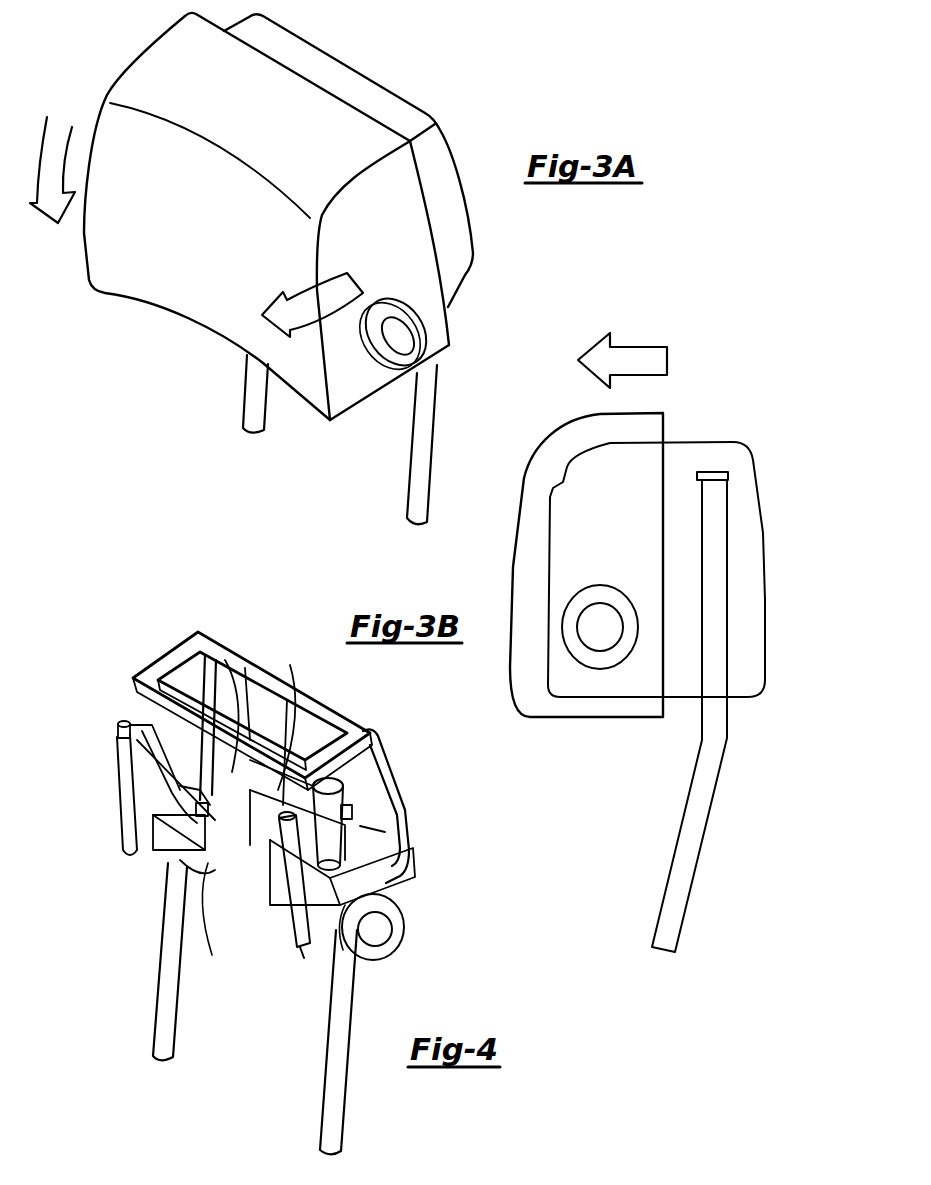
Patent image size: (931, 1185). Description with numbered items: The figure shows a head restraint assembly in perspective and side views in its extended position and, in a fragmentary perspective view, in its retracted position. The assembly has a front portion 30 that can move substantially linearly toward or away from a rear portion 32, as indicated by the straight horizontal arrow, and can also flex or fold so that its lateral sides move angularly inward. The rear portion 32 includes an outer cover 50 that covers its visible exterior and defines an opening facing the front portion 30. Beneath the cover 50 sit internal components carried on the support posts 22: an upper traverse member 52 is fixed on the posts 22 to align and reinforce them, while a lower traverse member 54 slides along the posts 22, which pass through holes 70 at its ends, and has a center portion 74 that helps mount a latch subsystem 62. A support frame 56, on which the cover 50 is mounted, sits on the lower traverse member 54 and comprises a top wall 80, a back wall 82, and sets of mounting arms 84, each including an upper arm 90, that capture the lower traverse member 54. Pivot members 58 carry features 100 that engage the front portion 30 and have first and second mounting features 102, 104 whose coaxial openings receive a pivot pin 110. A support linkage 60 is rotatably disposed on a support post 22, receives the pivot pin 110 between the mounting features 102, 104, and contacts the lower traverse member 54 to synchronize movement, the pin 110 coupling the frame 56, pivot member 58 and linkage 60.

In FIG. 3A, the support post 22 is at (403, 493).
In FIG. 3B, the support post 22 is at (676, 850).
In FIG. 4, the support post 22 is at (320, 1125).
In FIG. 3A, the front portion 30 is at (87, 260).
In FIG. 3B, the front portion 30 is at (510, 565).
In FIG. 3A, the rear portion 32 is at (383, 88).
In FIG. 3B, the rear portion 32 is at (766, 534).
In FIG. 3A, the outer cover 50 is at (473, 258).
In FIG. 3B, the outer cover 50 is at (765, 657).
In FIG. 4, the upper traverse member 52 is at (238, 734).
In FIG. 4, the lower traverse member 54 is at (416, 862).
In FIG. 4, the support frame 56 is at (393, 760).
In FIG. 4, the pivot member 58 is at (120, 803).
In FIG. 4, the support linkage 60 is at (205, 868).
In FIG. 4, the latch subsystem 62 is at (419, 886).
In FIG. 4, the hole 70 is at (128, 720).
In FIG. 4, the center portion 74 is at (244, 835).
In FIG. 4, the top wall 80 is at (182, 652).
In FIG. 4, the back wall 82 is at (408, 803).
In FIG. 4, the set of mounting arms 84 is at (192, 792).
In FIG. 4, the upper arm 90 is at (181, 791).
In FIG. 4, the feature 100 is at (293, 814).
In FIG. 4, the first mounting feature 102 is at (338, 902).
In FIG. 4, the second mounting feature 104 is at (212, 955).
In FIG. 4, the pivot pin 110 is at (287, 700).